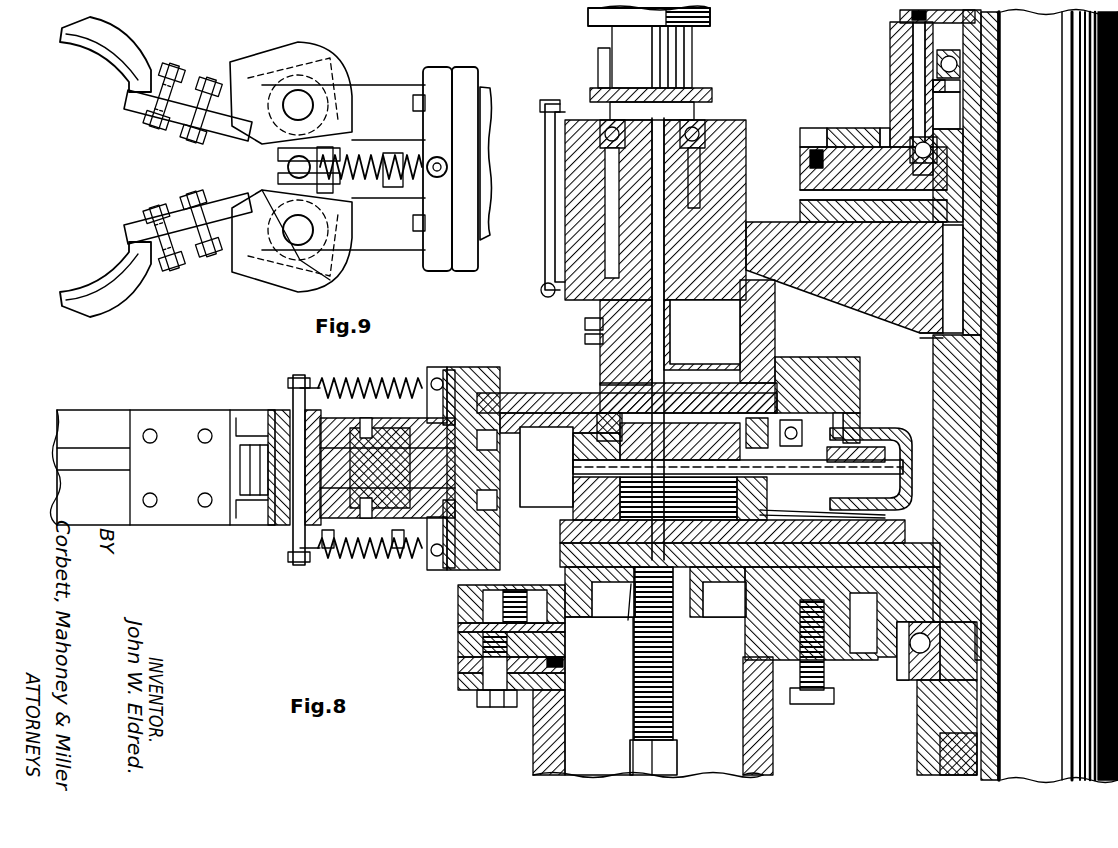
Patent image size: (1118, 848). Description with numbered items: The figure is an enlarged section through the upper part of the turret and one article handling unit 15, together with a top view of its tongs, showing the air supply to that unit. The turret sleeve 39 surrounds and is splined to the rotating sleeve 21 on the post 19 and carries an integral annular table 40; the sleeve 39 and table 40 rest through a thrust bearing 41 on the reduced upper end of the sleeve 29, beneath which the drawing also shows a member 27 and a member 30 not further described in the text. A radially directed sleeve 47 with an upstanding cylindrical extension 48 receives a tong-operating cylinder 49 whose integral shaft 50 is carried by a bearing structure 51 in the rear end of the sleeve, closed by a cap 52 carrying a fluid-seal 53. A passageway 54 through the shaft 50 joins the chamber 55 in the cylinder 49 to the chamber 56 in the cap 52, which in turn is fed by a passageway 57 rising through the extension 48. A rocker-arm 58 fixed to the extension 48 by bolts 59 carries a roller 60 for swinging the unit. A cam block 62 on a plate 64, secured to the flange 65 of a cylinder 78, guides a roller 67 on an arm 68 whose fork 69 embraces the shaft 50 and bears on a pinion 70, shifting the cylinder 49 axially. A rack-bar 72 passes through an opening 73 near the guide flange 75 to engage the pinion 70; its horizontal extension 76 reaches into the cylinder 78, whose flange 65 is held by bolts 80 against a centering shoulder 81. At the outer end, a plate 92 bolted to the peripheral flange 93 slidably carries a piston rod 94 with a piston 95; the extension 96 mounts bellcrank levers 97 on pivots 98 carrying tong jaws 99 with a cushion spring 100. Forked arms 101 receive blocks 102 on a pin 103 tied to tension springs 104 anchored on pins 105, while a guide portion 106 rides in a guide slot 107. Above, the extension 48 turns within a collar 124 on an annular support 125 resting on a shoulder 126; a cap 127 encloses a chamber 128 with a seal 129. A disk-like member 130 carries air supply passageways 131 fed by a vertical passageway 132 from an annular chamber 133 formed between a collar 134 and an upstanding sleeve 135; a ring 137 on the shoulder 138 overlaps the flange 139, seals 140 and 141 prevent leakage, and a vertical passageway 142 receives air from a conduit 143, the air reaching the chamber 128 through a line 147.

In FIG. 8, the article handling unit 15 is at (282, 538).
In FIG. 8, the post 19 is at (1043, 432).
In FIG. 8, the sleeve 21 is at (999, 582).
In FIG. 8, the nut 27 is at (940, 746).
In FIG. 8, the sleeve 29 is at (932, 714).
In FIG. 8, the bearing 30 is at (925, 682).
In FIG. 8, the sleeve 39 is at (958, 373).
In FIG. 8, the supporting table 40 is at (912, 578).
In FIG. 8, the thrust bearing 41 is at (896, 642).
In FIG. 9, the sleeve 47 is at (488, 94).
In FIG. 8, the sleeve 47 is at (512, 392).
In FIG. 8, the cylindrical extension 48 is at (742, 325).
In FIG. 8, the tong-operating cylinder 49 is at (562, 424).
In FIG. 8, the shaft portion 50 is at (866, 447).
In FIG. 8, the bearing structure 51 is at (758, 418).
In FIG. 8, the cap 52 is at (850, 398).
In FIG. 8, the fluid-seal 53 is at (885, 516).
In FIG. 8, the fluid passageway 54 is at (600, 470).
In FIG. 8, the chamber 55 is at (538, 424).
In FIG. 8, the chamber 56 is at (895, 436).
In FIG. 8, the passageway 57 is at (650, 310).
In FIG. 8, the rocker-arm 58 is at (598, 60).
In FIG. 8, the bolts 59 is at (585, 338).
In FIG. 8, the roller 60 is at (712, 18).
In FIG. 8, the cam block 62 is at (462, 636).
In FIG. 8, the plate 64 is at (462, 660).
In FIG. 8, the flange 65 is at (462, 678).
In FIG. 8, the roller 67 is at (462, 616).
In FIG. 8, the arm 68 is at (713, 592).
In FIG. 8, the fork 69 is at (613, 599).
In FIG. 8, the pinion 70 is at (612, 416).
In FIG. 8, the rack-bar 72 is at (666, 696).
In FIG. 8, the opening 73 is at (631, 606).
In FIG. 8, the guide flange 75 is at (726, 618).
In FIG. 8, the horizontal extension 76 is at (664, 752).
In FIG. 8, the cylinder 78 is at (548, 722).
In FIG. 8, the bolts 80 is at (480, 700).
In FIG. 8, the centering shoulder 81 is at (562, 661).
In FIG. 9, the plate 92 is at (437, 262).
In FIG. 8, the plate 92 is at (424, 562).
In FIG. 9, the peripheral flange 93 is at (465, 262).
In FIG. 8, the peripheral flange 93 is at (462, 586).
In FIG. 8, the piston rod 94 is at (394, 440).
In FIG. 8, the piston 95 is at (518, 493).
In FIG. 9, the extension 96 is at (386, 238).
In FIG. 9, the bellcrank levers 97 is at (264, 76).
In FIG. 8, the bellcrank levers 97 is at (250, 418).
In FIG. 9, the pivot 98 is at (286, 228).
In FIG. 9, the tong jaw 99 is at (122, 64).
In FIG. 8, the tong jaw 99 is at (138, 418).
In FIG. 9, the cushion spring 100 is at (168, 66).
In FIG. 9, the inwardly extending arms 101 is at (278, 158).
In FIG. 9, the blocks 102 is at (278, 179).
In FIG. 9, the pin 103 is at (300, 120).
In FIG. 8, the pin 103 is at (258, 470).
In FIG. 9, the tension springs 104 is at (434, 178).
In FIG. 8, the tension springs 104 is at (350, 380).
In FIG. 9, the anchor pins 105 is at (456, 152).
In FIG. 8, the anchor pins 105 is at (436, 372).
In FIG. 9, the guide portion 106 is at (358, 152).
In FIG. 8, the guide portion 106 is at (340, 516).
In FIG. 9, the guide slot 107 is at (396, 152).
In FIG. 8, the guide slot 107 is at (392, 516).
In FIG. 8, the collar 124 is at (582, 206).
In FIG. 8, the annular support 125 is at (818, 266).
In FIG. 8, the shoulder 126 is at (936, 340).
In FIG. 8, the cap 127 is at (692, 92).
In FIG. 8, the chamber 128 is at (705, 95).
In FIG. 8, the fluid-tight seal 129 is at (706, 118).
In FIG. 8, the disk-like member 130 is at (857, 128).
In FIG. 8, the air supply passageways 131 is at (832, 184).
In FIG. 8, the vertical passageway 132 is at (952, 166).
In FIG. 8, the annular chamber 133 is at (962, 86).
In FIG. 8, the collar 134 is at (900, 60).
In FIG. 8, the upstanding sleeve 135 is at (975, 108).
In FIG. 8, the ring 137 is at (832, 128).
In FIG. 8, the annular shoulder 138 is at (816, 156).
In FIG. 8, the peripheral flange 139 is at (880, 130).
In FIG. 8, the fluid-tight seal 140 is at (940, 140).
In FIG. 8, the seal 141 is at (962, 60).
In FIG. 8, the vertical passageway 142 is at (918, 38).
In FIG. 8, the conduit 143 is at (900, 16).
In FIG. 8, the line 147 is at (545, 141).